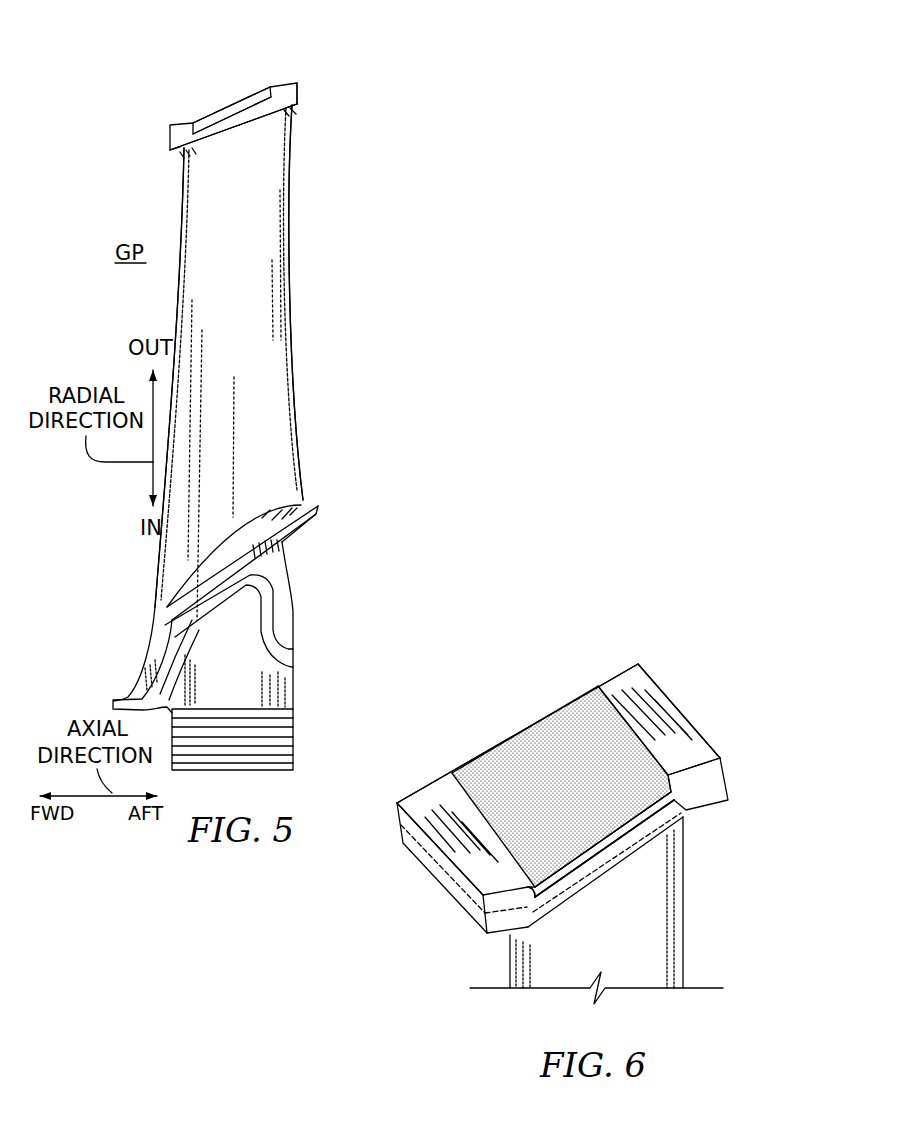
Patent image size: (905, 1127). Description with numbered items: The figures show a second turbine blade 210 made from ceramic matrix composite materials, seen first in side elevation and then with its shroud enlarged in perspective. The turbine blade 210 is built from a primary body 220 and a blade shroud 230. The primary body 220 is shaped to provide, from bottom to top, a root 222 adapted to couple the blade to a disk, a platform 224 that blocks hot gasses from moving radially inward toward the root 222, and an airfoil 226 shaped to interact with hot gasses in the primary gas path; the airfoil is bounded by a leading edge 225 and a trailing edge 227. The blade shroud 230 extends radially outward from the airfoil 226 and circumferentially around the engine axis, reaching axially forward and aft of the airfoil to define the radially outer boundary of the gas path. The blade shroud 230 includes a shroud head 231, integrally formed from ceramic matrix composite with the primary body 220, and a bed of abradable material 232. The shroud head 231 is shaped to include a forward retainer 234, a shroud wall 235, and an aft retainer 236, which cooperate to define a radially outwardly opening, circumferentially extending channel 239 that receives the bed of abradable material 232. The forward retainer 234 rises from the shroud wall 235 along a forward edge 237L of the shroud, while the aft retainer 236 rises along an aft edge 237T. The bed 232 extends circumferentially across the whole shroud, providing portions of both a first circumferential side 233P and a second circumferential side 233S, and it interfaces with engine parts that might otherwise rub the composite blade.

In FIG. 5, the turbine blade 210 is at (124, 106).
In FIG. 5, the primary body 220 is at (388, 722).
In FIG. 6, the primary body 220 is at (708, 976).
In FIG. 5, the root 222 is at (299, 735).
In FIG. 5, the platform 224 is at (452, 462).
In FIG. 5, the leading edge 225 is at (182, 282).
In FIG. 5, the airfoil 226 is at (294, 403).
In FIG. 6, the airfoil 226 is at (660, 975).
In FIG. 5, the trailing edge 227 is at (288, 278).
In FIG. 5, the blade shroud 230 is at (290, 40).
In FIG. 6, the blade shroud 230 is at (674, 682).
In FIG. 5, the shroud head 231 is at (308, 90).
In FIG. 6, the shroud head 231 is at (740, 774).
In FIG. 5, the bed of abradable material 232 is at (241, 87).
In FIG. 6, the bed of abradable material 232 is at (531, 738).
In FIG. 6, the first circumferential side 233P is at (505, 740).
In FIG. 6, the second circumferential side 233S is at (621, 823).
In FIG. 5, the forward retainer 234 is at (177, 138).
In FIG. 6, the forward retainer 234 is at (531, 900).
In FIG. 5, the shroud wall 235 is at (245, 125).
In FIG. 6, the shroud wall 235 is at (599, 862).
In FIG. 5, the aft retainer 236 is at (293, 105).
In FIG. 6, the aft retainer 236 is at (708, 778).
In FIG. 6, the forward edge 237L is at (432, 860).
In FIG. 6, the aft edge 237T is at (694, 717).
In FIG. 5, the channel 239 is at (213, 118).
In FIG. 6, the channel 239 is at (480, 773).